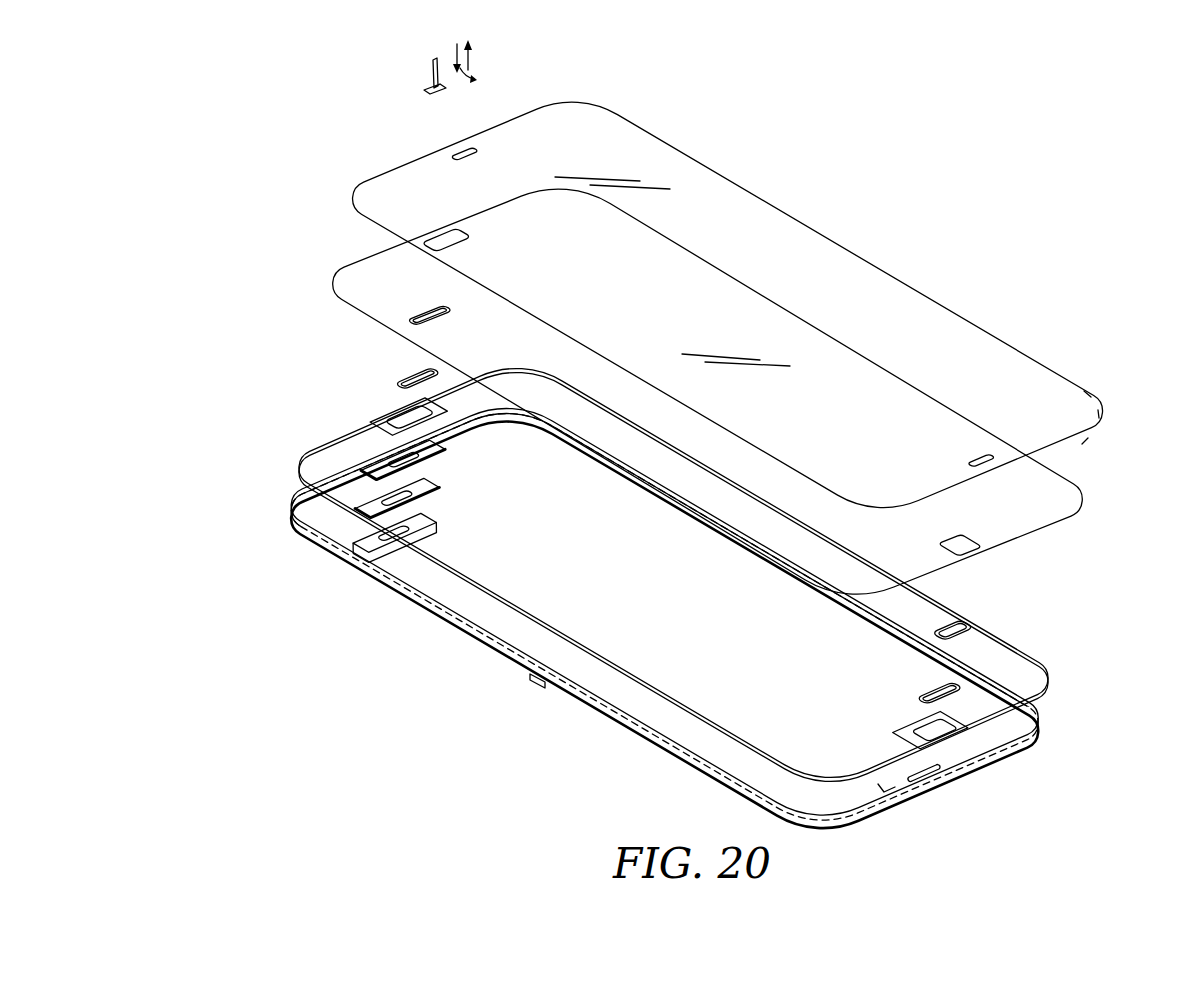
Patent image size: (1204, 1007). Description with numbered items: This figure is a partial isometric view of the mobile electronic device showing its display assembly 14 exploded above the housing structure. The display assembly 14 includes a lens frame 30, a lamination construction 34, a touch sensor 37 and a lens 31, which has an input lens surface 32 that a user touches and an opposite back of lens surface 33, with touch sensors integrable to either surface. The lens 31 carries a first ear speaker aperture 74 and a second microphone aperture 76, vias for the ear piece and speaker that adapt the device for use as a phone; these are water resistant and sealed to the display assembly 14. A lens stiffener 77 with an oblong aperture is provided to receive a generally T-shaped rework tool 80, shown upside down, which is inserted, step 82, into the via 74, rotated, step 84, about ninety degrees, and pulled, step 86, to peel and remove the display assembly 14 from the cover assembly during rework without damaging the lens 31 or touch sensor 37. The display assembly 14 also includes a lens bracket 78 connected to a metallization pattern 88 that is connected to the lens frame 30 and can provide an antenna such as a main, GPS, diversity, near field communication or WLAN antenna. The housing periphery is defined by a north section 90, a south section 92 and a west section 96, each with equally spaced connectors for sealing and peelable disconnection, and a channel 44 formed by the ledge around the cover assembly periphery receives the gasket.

The display assembly 14 is at (700, 430).
The lens frame 30 is at (683, 593).
The lens 31 is at (1099, 414).
The input lens surface 32 is at (1092, 398).
The back of lens surface 33 is at (1088, 442).
The lamination construction 34 is at (1047, 672).
The touch sensor 37 is at (1078, 513).
The channel 44 is at (706, 304).
The first ear speaker aperture 74 is at (456, 152).
The second microphone aperture 76 is at (1002, 468).
The lens stiffener 77 is at (393, 376).
The lens bracket 78 is at (378, 558).
The rework tool 80 is at (432, 74).
The insertion step 82 is at (452, 42).
The rotation step 84 is at (472, 82).
The pulling step 86 is at (474, 52).
The metallization pattern 88 is at (485, 624).
The north section 90 is at (693, 304).
The south section 92 is at (758, 403).
The west section 96 is at (683, 593).